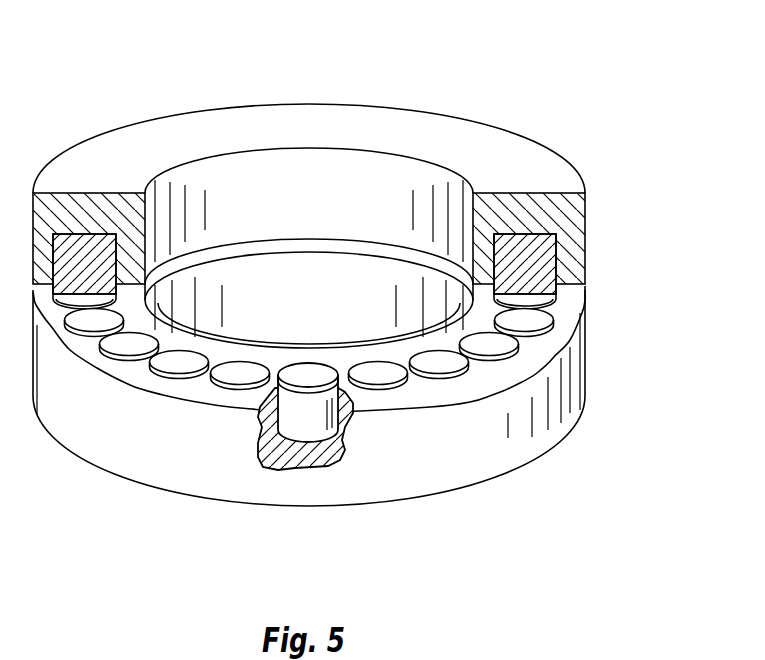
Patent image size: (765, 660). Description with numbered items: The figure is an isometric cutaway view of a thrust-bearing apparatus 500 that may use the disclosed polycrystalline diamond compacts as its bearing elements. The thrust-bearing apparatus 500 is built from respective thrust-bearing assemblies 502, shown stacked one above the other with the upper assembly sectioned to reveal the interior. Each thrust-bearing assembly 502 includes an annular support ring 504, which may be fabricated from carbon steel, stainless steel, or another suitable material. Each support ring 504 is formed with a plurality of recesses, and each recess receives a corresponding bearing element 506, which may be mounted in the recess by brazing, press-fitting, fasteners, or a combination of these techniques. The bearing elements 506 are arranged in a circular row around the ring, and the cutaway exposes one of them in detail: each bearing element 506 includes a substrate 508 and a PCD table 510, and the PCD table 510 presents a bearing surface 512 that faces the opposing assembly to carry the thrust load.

The thrust-bearing apparatus 500 is at (366, 289).
The thrust-bearing assembly 502 is at (604, 257).
The annular support ring 504 is at (566, 218).
The bearing element 506 is at (290, 452).
The substrate 508 is at (307, 432).
The PCD table 510 is at (258, 413).
The bearing surface 512 is at (243, 372).